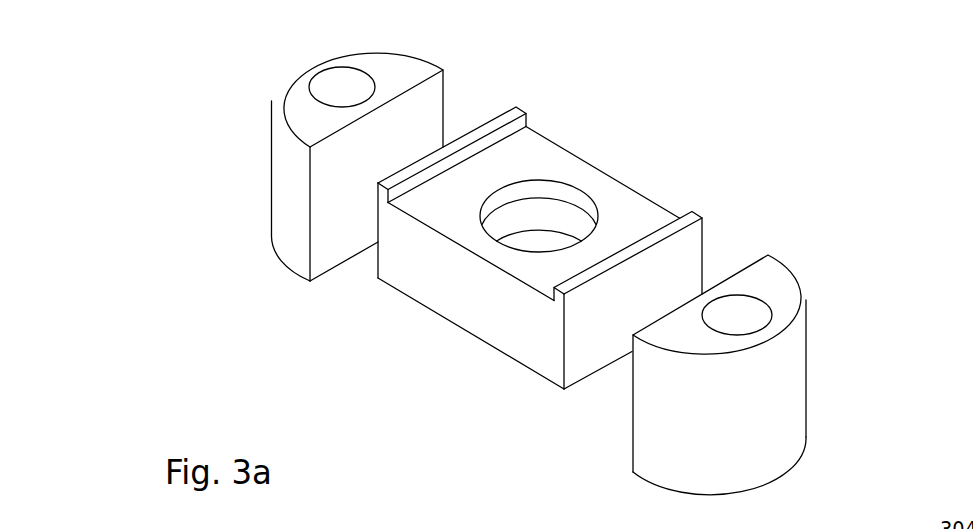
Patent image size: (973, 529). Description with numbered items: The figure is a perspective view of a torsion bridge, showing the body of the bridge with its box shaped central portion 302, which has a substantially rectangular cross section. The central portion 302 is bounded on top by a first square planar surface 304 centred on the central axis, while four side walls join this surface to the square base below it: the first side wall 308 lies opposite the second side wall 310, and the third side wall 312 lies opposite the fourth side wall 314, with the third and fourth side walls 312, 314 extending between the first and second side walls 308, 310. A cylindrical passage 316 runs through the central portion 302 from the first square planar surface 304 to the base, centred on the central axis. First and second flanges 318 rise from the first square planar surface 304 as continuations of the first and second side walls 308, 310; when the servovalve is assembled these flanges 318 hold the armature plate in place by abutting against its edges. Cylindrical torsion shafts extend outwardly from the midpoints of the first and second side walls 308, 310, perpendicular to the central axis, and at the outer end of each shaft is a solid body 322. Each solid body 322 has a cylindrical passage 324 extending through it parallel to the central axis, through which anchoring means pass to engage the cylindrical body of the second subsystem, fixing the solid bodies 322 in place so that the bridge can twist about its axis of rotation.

The box shaped central portion 302 is at (547, 215).
The first square planar surface 304 is at (539, 215).
The first side wall 308 is at (380, 267).
The second side wall 310 is at (683, 262).
The third side wall 312 is at (450, 300).
The fourth side wall 314 is at (697, 206).
The cylindrical passage 316 is at (538, 205).
The flanges 318 is at (500, 140).
The solid bodies 322 is at (272, 234).
The cylindrical passage 324 is at (332, 87).